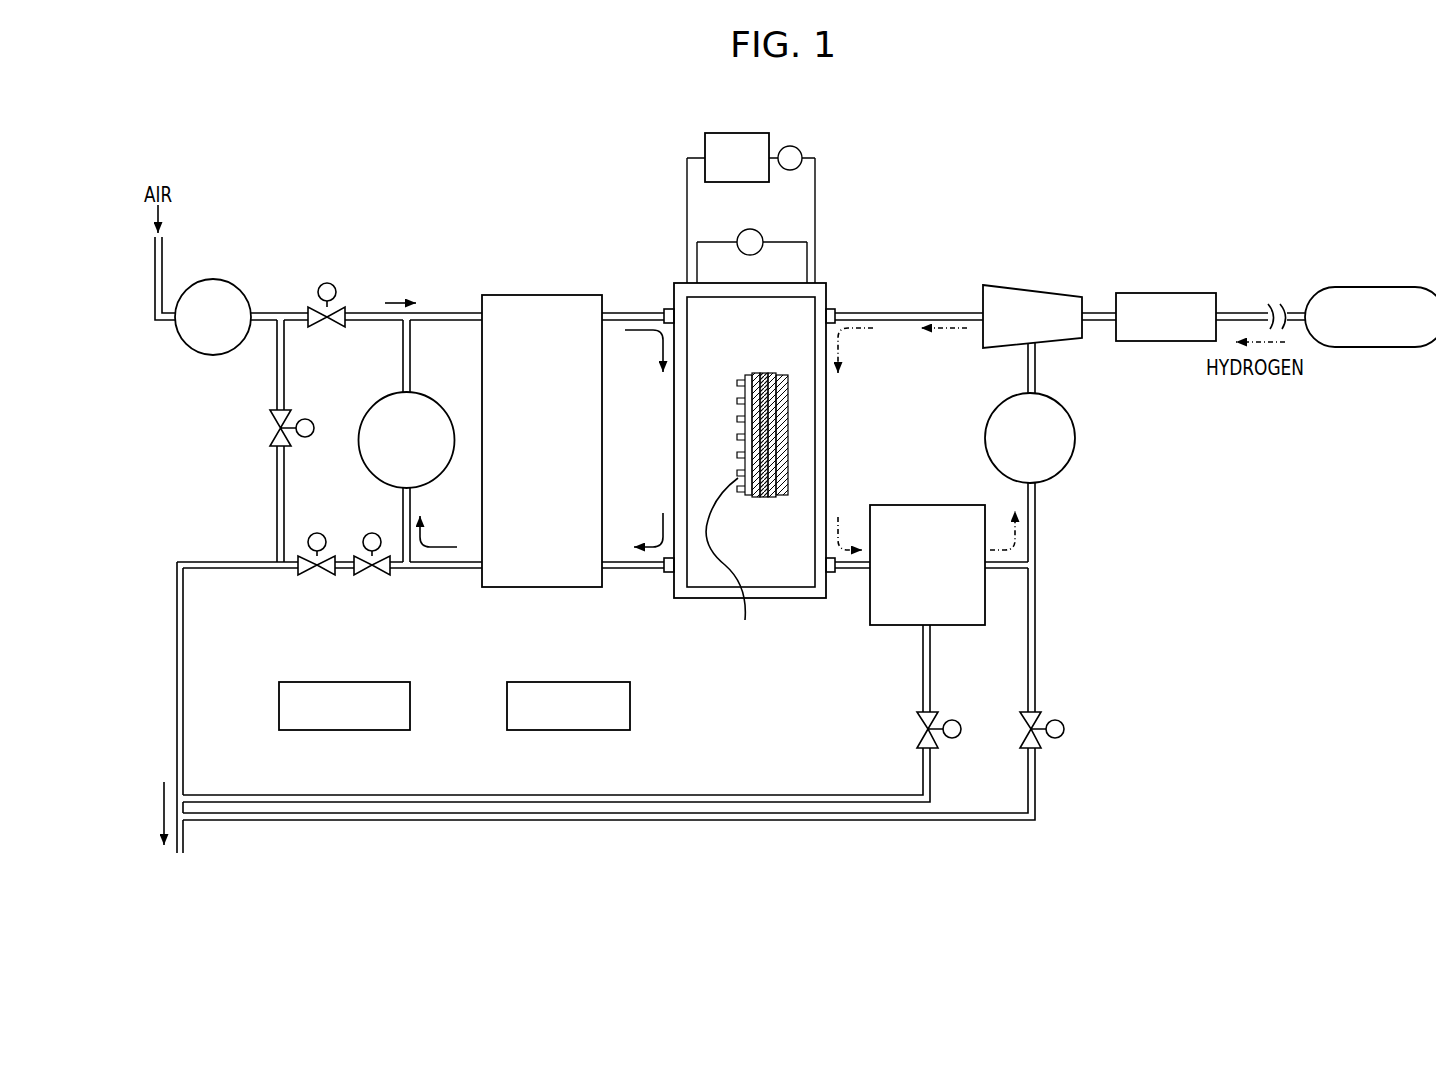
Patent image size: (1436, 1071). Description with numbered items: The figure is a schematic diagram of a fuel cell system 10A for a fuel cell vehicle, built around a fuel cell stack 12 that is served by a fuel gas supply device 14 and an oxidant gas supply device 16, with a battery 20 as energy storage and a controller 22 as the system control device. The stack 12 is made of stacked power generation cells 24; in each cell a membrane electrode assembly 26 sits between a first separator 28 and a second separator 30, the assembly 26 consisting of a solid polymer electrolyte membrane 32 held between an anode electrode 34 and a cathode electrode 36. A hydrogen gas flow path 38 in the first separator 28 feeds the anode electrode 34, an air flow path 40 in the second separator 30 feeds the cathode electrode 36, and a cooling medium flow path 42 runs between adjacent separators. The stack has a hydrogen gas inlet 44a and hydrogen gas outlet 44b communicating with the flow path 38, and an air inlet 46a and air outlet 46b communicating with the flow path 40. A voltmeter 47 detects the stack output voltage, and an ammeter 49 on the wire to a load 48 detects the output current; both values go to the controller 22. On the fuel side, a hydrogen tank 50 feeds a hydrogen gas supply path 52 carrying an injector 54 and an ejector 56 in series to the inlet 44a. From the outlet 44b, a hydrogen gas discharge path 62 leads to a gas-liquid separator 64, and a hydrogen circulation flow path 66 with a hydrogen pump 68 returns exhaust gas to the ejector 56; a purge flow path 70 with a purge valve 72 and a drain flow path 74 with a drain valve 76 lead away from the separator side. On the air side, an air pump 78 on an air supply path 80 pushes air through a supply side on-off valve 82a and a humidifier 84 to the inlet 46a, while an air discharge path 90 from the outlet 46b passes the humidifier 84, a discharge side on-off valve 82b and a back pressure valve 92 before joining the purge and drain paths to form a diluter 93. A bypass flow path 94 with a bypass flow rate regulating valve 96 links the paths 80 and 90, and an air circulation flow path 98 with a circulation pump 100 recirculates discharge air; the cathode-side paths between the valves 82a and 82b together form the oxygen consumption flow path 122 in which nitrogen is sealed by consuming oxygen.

The fuel cell system 10A is at (1288, 141).
The fuel cell stack 12 is at (670, 456).
The fuel gas supply device 14 is at (1123, 219).
The oxidant gas supply device 16 is at (436, 199).
The battery 20 is at (570, 682).
The controller 22 is at (345, 682).
The power generation cell 24 is at (710, 470).
The membrane electrode assembly 26 is at (778, 396).
The first separator 28 is at (788, 395).
The second separator 30 is at (738, 385).
The solid polymer electrolyte membrane 32 is at (760, 373).
The anode electrode 34 is at (777, 373).
The cathode electrode 36 is at (746, 373).
The hydrogen gas flow path 38 is at (785, 445).
The air flow path 40 is at (737, 400).
The cooling medium flow path 42 is at (748, 576).
The hydrogen gas inlet 44a is at (831, 308).
The hydrogen gas outlet 44b is at (831, 572).
The air inlet 46a is at (667, 308).
The air outlet 46b is at (668, 572).
The voltmeter 47 is at (755, 230).
The load 48 is at (705, 143).
The ammeter 49 is at (795, 147).
The hydrogen tank 50 is at (1370, 287).
The hydrogen gas supply path 52 is at (1290, 312).
The injector 54 is at (1158, 293).
The ejector 56 is at (1038, 290).
The hydrogen gas discharge path 62 is at (1000, 568).
The gas-liquid separator 64 is at (950, 505).
The hydrogen circulation flow path 66 is at (1035, 520).
The hydrogen pump 68 is at (1074, 452).
The purge flow path 70 is at (1035, 580).
The purge valve 72 is at (1055, 720).
The drain flow path 74 is at (678, 794).
The drain valve 76 is at (952, 720).
The air pump 78 is at (213, 279).
The air supply path 80 is at (265, 312).
The supply side on-off valve 82a is at (327, 283).
The discharge side on-off valve 82b is at (371, 533).
The humidifier 84 is at (543, 295).
The air discharge path 90 is at (628, 568).
The back pressure valve 92 is at (316, 533).
The diluter 93 is at (183, 845).
The bypass flow path 94 is at (277, 385).
The bypass flow rate regulating valve 96 is at (305, 419).
The air circulation flow path 98 is at (403, 352).
The circulation pump 100 is at (436, 400).
The oxygen consumption flow path 122 is at (441, 298).